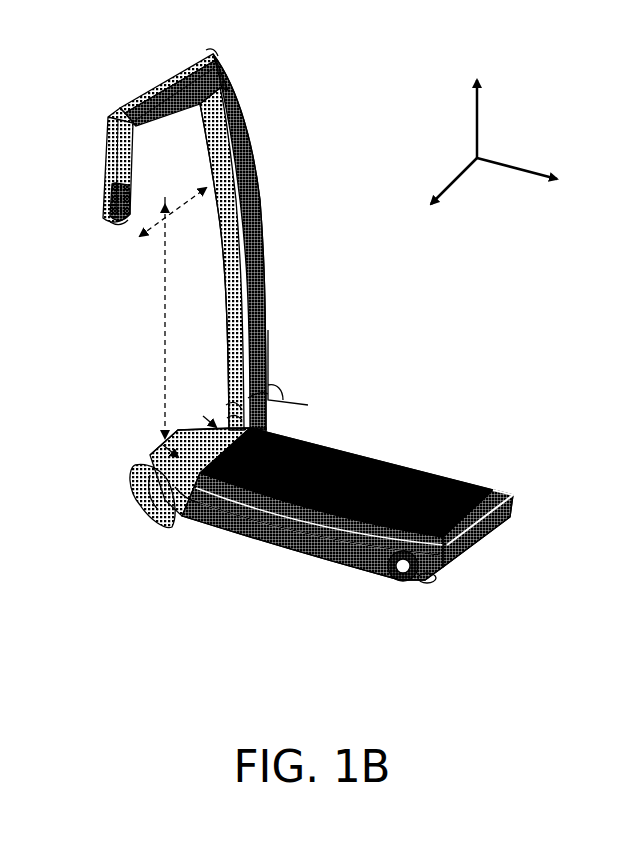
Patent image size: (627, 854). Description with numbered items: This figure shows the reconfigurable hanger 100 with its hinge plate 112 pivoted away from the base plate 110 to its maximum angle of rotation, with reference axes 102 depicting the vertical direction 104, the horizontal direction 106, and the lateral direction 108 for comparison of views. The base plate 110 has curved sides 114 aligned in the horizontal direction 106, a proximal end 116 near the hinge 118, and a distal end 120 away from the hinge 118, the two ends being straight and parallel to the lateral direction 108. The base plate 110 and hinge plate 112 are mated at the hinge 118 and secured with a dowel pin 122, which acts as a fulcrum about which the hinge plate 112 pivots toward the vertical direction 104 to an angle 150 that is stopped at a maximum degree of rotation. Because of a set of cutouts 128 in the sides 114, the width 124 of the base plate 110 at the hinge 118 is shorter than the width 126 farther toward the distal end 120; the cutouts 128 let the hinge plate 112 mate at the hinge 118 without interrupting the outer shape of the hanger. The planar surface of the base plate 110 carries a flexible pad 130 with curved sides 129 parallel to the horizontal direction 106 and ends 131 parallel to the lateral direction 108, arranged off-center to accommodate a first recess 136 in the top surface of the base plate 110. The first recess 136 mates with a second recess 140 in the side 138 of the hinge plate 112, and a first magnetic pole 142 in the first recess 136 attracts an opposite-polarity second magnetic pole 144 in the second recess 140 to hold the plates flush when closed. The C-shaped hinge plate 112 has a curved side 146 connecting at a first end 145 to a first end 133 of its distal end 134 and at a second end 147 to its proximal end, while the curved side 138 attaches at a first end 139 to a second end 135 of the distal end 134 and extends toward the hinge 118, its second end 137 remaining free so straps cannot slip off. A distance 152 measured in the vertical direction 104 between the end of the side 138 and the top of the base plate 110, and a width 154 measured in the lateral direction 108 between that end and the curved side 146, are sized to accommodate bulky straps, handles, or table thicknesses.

The reconfigurable hanger 100 is at (286, 38).
The reference axes 102 is at (522, 96).
The vertical direction 104 is at (477, 108).
The horizontal direction 106 is at (526, 182).
The lateral direction 108 is at (457, 173).
The base plate 110 is at (292, 578).
The hinge plate 112 is at (290, 271).
The sides 114 is at (363, 430).
The proximal end 116 is at (163, 447).
The hinge 118 is at (124, 528).
The distal end 120 is at (488, 523).
The dowel pin 122 is at (132, 480).
The width 124 is at (205, 440).
The width 126 is at (193, 491).
The cutouts 128 is at (230, 420).
The curved sides 129 is at (393, 448).
The flexible pad 130 is at (412, 480).
The ends 131 is at (503, 504).
The first end 133 is at (210, 56).
The distal end 134 is at (160, 92).
The second end 135 is at (112, 115).
The first recess 136 is at (393, 560).
The second end 137 is at (126, 225).
The side 138 is at (112, 152).
The first end 139 is at (113, 118).
The second recess 140 is at (150, 193).
The first magnetic pole 142 is at (432, 570).
The second magnetic pole 144 is at (118, 203).
The first end 145 is at (216, 57).
The curved side 146 is at (258, 204).
The second end 147 is at (272, 418).
The angle 150 is at (285, 352).
The distance 152 is at (158, 302).
The width 154 is at (188, 203).